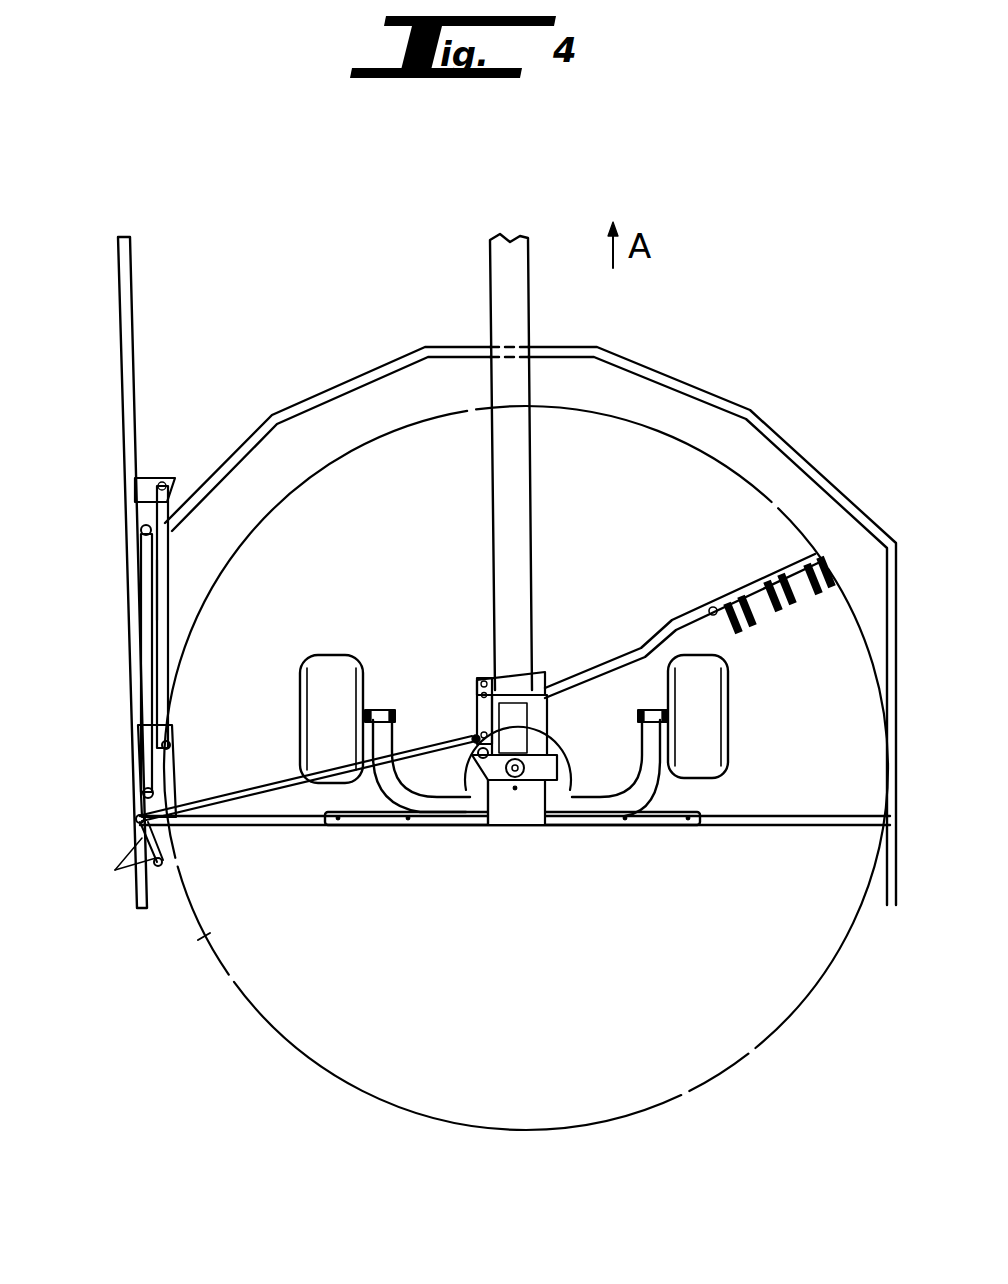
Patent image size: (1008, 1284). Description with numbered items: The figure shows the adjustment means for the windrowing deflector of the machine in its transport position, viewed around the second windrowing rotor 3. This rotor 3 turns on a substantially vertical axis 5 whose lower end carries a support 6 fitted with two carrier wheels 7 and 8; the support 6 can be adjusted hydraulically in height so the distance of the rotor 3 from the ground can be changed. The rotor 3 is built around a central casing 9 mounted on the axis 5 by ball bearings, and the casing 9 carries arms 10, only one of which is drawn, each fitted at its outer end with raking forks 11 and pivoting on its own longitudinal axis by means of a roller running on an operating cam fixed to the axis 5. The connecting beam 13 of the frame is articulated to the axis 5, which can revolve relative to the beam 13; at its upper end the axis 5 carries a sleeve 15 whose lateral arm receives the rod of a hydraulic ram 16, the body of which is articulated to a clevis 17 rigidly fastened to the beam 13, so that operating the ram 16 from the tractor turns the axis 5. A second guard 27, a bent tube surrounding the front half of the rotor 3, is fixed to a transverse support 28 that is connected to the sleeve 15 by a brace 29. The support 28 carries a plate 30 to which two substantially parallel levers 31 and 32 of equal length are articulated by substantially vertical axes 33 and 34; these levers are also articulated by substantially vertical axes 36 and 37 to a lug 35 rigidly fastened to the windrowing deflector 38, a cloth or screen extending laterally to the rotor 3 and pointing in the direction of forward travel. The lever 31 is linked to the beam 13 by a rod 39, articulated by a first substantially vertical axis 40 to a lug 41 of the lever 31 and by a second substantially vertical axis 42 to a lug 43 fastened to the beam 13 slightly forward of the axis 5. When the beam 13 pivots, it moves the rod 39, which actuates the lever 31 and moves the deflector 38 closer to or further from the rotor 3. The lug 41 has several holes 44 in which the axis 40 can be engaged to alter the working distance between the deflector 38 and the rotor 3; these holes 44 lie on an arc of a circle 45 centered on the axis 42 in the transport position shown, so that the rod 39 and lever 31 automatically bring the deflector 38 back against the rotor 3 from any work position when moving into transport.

The second windrowing rotor 3 is at (418, 420).
The substantially vertical axis 5 is at (521, 790).
The support 6 is at (638, 796).
The carrier wheel 7 is at (330, 680).
The carrier wheel 8 is at (708, 713).
The central casing 9 is at (565, 746).
The arm 10 is at (696, 622).
The raking fork 11 is at (762, 592).
The connecting beam 13 is at (512, 321).
The sleeve 15 is at (480, 818).
The hydraulic ram 16 is at (477, 722).
The clevis 17 is at (526, 676).
The second guard 27 is at (294, 404).
The transverse support 28 is at (276, 830).
The brace 29 is at (512, 800).
The plate 30 is at (170, 772).
The lever 31 is at (148, 641).
The lever 32 is at (168, 588).
The substantially vertical axis 33 is at (144, 794).
The substantially vertical axis 34 is at (170, 742).
The lug 35 is at (137, 503).
The substantially vertical axis 36 is at (143, 534).
The substantially vertical axis 37 is at (163, 484).
The windrowing deflector 38 is at (120, 323).
The rod 39 is at (290, 782).
The first substantially vertical axis 40 is at (137, 821).
The lug 41 is at (158, 856).
The second substantially vertical axis 42 is at (472, 738).
The lug 43 is at (478, 752).
The holes 44 is at (111, 873).
The arc of a circle 45 is at (200, 943).